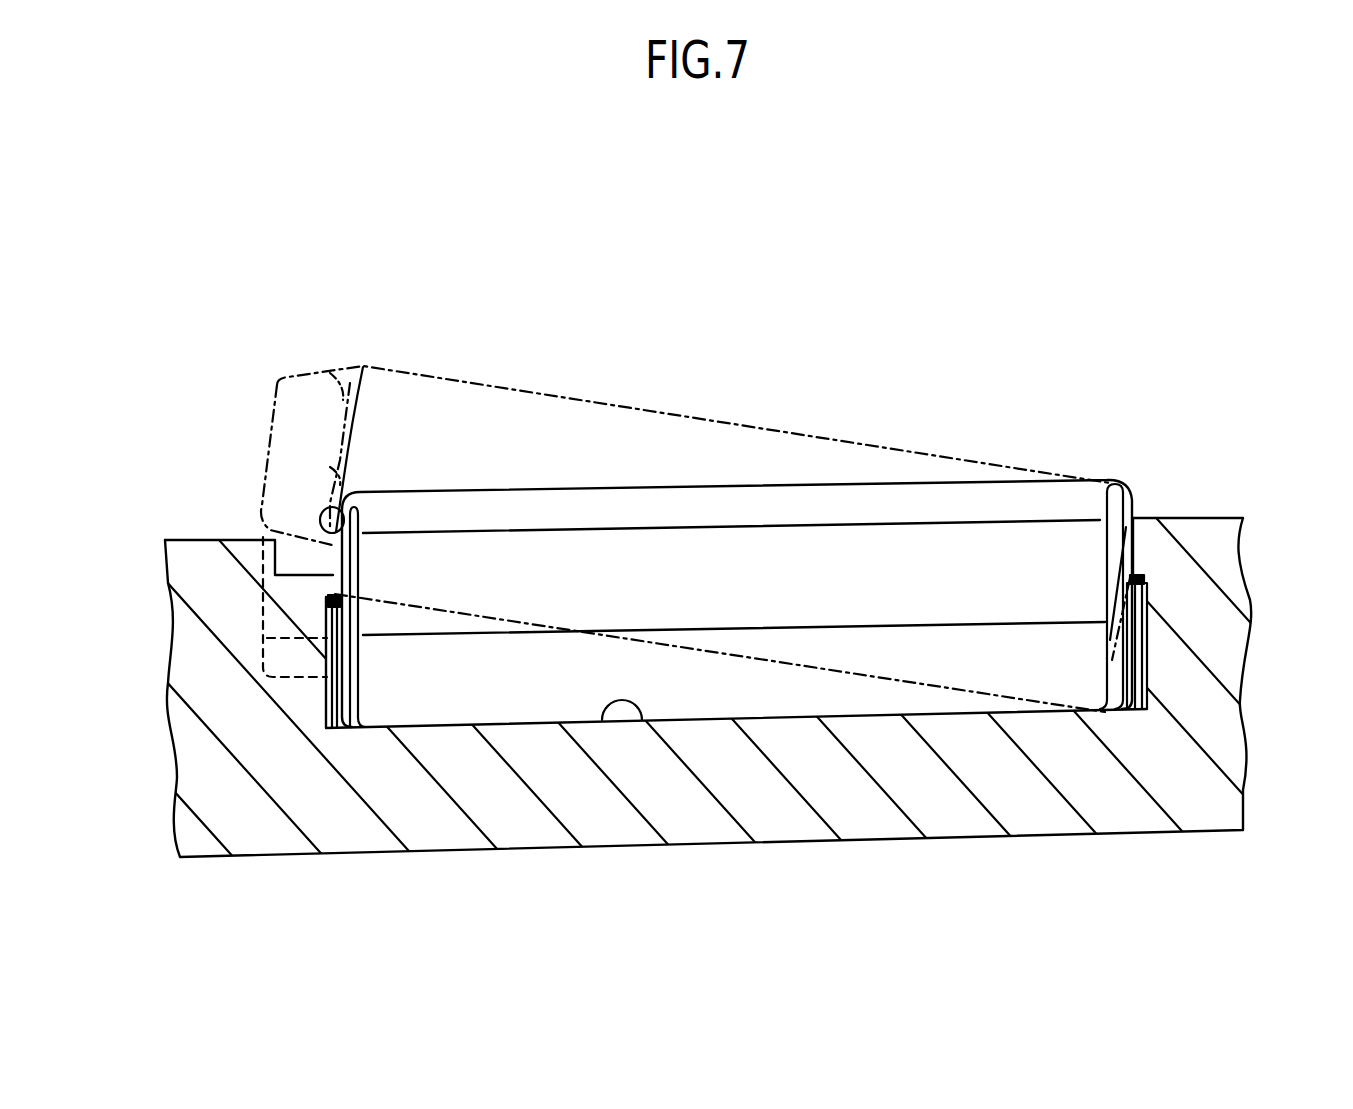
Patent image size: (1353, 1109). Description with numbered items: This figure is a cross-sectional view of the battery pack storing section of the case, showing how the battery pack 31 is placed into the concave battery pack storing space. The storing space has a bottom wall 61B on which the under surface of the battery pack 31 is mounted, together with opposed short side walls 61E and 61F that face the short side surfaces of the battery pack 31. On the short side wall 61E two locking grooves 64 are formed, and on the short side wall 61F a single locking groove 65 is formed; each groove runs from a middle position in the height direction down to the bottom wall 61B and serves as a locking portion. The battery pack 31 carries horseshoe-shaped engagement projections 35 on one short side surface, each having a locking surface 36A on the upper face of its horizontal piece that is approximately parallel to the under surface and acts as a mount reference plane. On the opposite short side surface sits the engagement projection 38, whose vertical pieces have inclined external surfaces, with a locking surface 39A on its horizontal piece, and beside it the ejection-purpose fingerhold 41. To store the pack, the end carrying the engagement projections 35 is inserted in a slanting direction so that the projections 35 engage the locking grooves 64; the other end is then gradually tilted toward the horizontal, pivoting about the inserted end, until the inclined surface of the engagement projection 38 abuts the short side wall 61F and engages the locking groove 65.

The battery pack 31 is at (617, 487).
The engagement projection 35 is at (1142, 594).
The locking surface 36A is at (1128, 561).
The engagement projection 38 is at (327, 653).
The locking surface 39A is at (345, 590).
The ejection-purpose fingerhold 41 is at (323, 520).
The bottom wall 61B is at (603, 717).
The short side wall 61E is at (1117, 550).
The short side wall 61F is at (360, 577).
The locking groove 64 is at (1140, 660).
The locking groove 65 is at (340, 712).